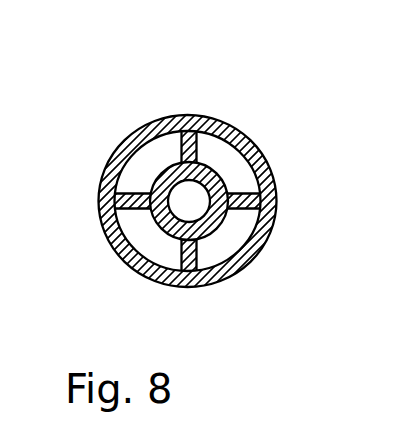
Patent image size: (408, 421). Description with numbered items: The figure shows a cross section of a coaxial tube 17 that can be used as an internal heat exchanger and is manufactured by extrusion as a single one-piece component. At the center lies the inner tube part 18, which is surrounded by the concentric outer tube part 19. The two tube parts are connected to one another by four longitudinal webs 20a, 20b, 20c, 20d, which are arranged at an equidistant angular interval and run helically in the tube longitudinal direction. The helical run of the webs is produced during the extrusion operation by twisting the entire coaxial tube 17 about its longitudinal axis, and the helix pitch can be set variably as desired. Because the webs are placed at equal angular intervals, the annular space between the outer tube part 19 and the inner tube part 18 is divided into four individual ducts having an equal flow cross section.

The coaxial tube 17 is at (246, 108).
The inner tube part 18 is at (214, 172).
The outer tube part 19 is at (223, 270).
The longitudinal web 20a is at (152, 130).
The longitudinal web 20b is at (258, 228).
The longitudinal web 20c is at (140, 271).
The longitudinal web 20d is at (112, 172).